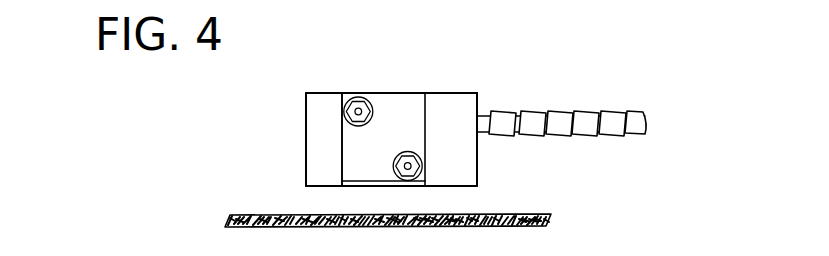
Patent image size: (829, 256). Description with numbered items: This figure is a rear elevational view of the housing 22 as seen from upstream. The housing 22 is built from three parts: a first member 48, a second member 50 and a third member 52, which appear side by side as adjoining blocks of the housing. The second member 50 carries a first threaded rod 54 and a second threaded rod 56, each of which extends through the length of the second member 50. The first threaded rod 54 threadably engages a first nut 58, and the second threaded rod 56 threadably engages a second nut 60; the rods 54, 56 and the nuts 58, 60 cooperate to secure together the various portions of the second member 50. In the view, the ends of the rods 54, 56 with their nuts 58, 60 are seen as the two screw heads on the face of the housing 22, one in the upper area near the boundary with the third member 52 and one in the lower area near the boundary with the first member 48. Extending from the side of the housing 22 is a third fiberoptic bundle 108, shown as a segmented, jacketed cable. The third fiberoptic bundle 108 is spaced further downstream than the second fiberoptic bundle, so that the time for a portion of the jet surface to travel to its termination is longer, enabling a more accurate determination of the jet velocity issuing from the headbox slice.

The housing 22 is at (406, 80).
The first member 48 is at (463, 165).
The second member 50 is at (372, 175).
The third member 52 is at (312, 148).
The first threaded rod 54 is at (358, 108).
The second threaded rod 56 is at (413, 177).
The first nut 58 is at (342, 110).
The second nut 60 is at (409, 152).
The third fiberoptic bundle 108 is at (578, 144).